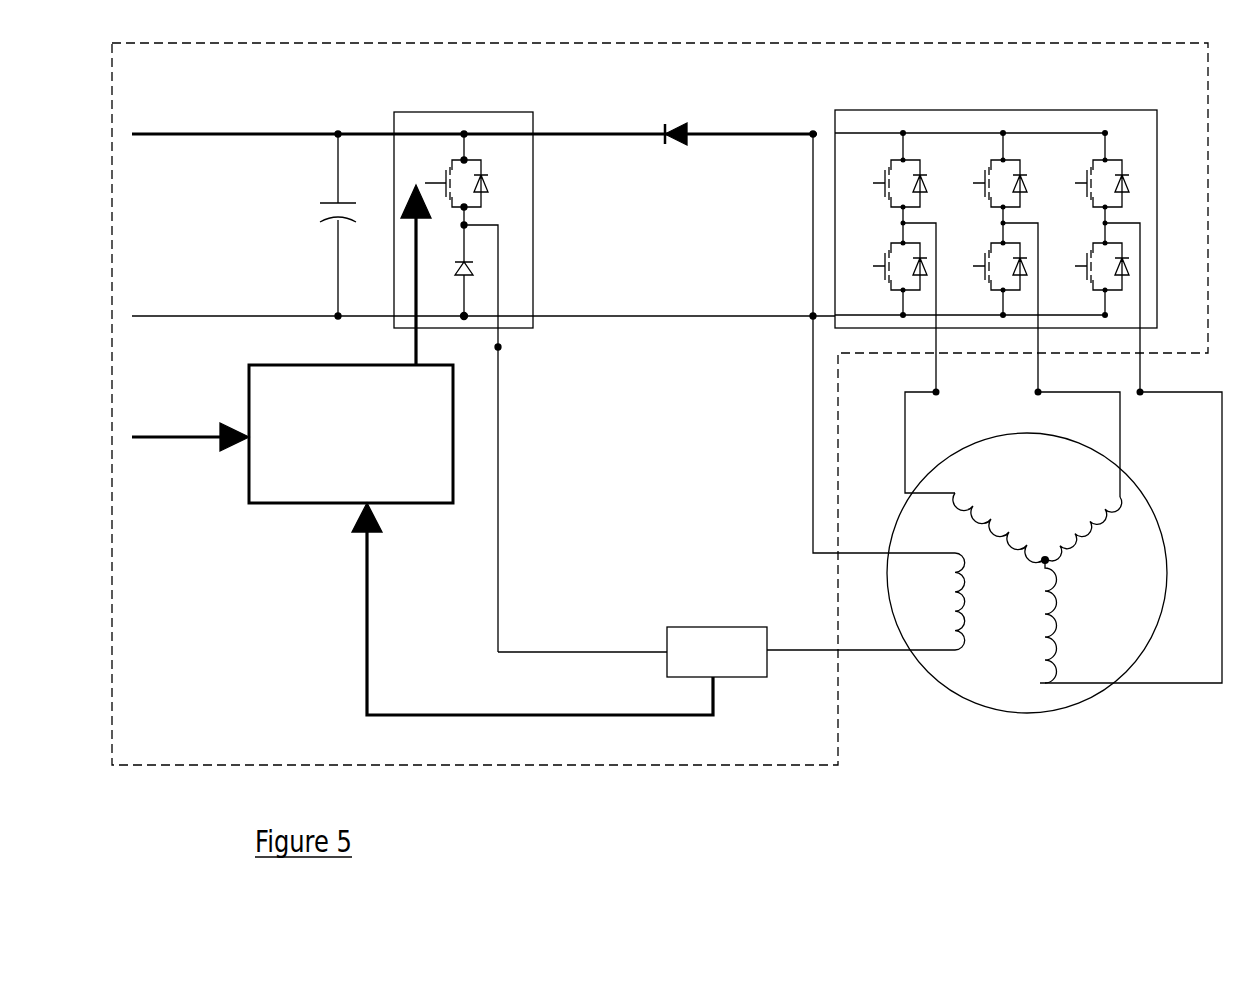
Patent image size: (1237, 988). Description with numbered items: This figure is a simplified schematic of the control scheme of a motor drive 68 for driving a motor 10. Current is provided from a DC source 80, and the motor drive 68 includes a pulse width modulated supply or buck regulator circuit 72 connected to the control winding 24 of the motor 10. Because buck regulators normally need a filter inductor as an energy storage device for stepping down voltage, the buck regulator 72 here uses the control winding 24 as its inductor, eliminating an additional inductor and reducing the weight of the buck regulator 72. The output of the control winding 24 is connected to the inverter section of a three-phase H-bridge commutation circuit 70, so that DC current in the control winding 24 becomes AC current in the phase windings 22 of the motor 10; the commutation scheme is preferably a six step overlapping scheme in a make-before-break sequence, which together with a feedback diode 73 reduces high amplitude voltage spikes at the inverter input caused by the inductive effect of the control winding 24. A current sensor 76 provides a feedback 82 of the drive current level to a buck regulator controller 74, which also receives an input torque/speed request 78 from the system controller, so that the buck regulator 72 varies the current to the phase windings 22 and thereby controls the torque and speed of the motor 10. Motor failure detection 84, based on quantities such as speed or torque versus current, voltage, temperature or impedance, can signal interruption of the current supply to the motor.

The motor 10 is at (988, 778).
The phase windings 22 is at (1058, 645).
The control winding 24 is at (947, 630).
The motor drive 68 is at (572, 768).
The 3-phase H-bridge commutation circuit 70 is at (1065, 110).
The buck regulator circuit 72 is at (494, 353).
The feedback diode 73 is at (676, 102).
The buck regulator controller 74 is at (295, 505).
The current sensor 76 is at (745, 678).
The input torque/speed request 78 is at (190, 423).
The DC source 80 is at (483, 207).
The feedback 82 is at (532, 609).
The motor failure detection 84 is at (1219, 803).